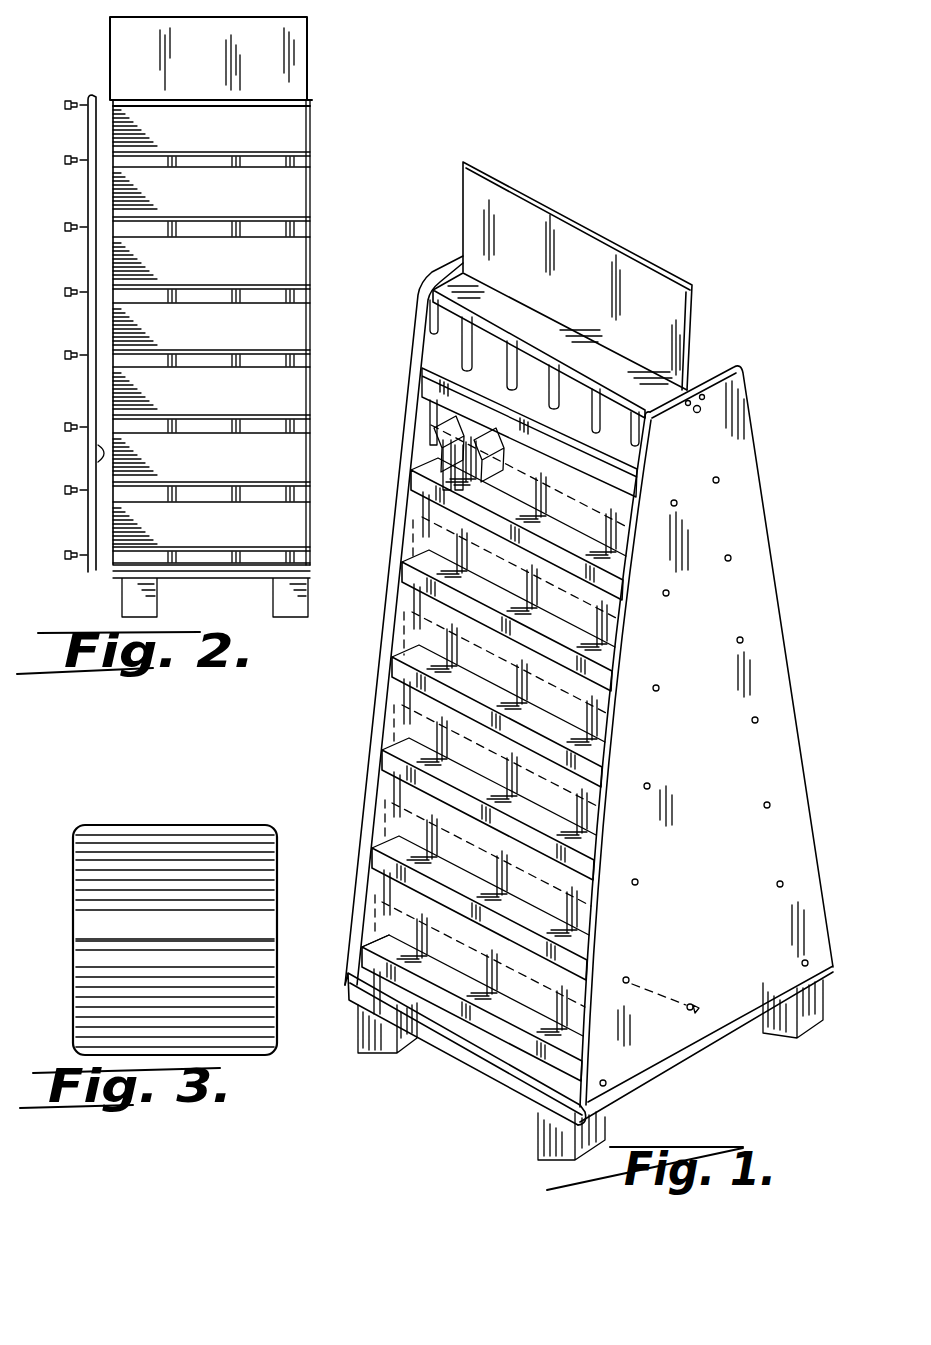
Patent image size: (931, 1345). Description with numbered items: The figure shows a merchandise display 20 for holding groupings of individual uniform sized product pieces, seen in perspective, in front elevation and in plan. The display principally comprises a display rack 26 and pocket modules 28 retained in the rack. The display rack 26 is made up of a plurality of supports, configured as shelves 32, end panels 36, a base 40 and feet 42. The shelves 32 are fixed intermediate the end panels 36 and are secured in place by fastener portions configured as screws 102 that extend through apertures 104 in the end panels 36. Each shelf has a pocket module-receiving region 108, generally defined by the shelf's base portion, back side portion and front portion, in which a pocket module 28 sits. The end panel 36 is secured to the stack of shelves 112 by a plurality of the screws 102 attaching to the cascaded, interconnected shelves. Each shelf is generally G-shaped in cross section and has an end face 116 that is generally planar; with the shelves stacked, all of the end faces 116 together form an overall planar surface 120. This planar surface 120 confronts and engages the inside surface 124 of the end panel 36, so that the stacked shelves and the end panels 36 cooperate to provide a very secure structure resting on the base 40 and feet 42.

In FIG. 1, the merchandise display 20 is at (559, 661).
In FIG. 1, the display rack 26 is at (748, 492).
In FIG. 1, the pocket modules 28 is at (410, 427).
In FIG. 2, the shelves 32 is at (278, 357).
In FIG. 1, the shelves 32 is at (392, 719).
In FIG. 2, the end panels 36 is at (88, 97).
In FIG. 1, the end panels 36 is at (397, 503).
In FIG. 1, the base 40 is at (498, 1072).
In FIG. 1, the feet 42 is at (378, 1036).
In FIG. 2, the screws 102 is at (75, 494).
In FIG. 1, the screws 102 is at (694, 1012).
In FIG. 1, the apertures 104 is at (628, 984).
In FIG. 2, the pocket module-receiving region 108 is at (280, 200).
In FIG. 1, the pocket module-receiving region 108 is at (432, 542).
In FIG. 2, the stack of shelves 112 is at (276, 114).
In FIG. 1, the stack of shelves 112 is at (570, 276).
In FIG. 2, the end face 116 is at (118, 527).
In FIG. 2, the planar surface 120 is at (115, 378).
In FIG. 2, the inside surface 124 is at (98, 455).
In FIG. 1, the inside surface 124 is at (370, 915).